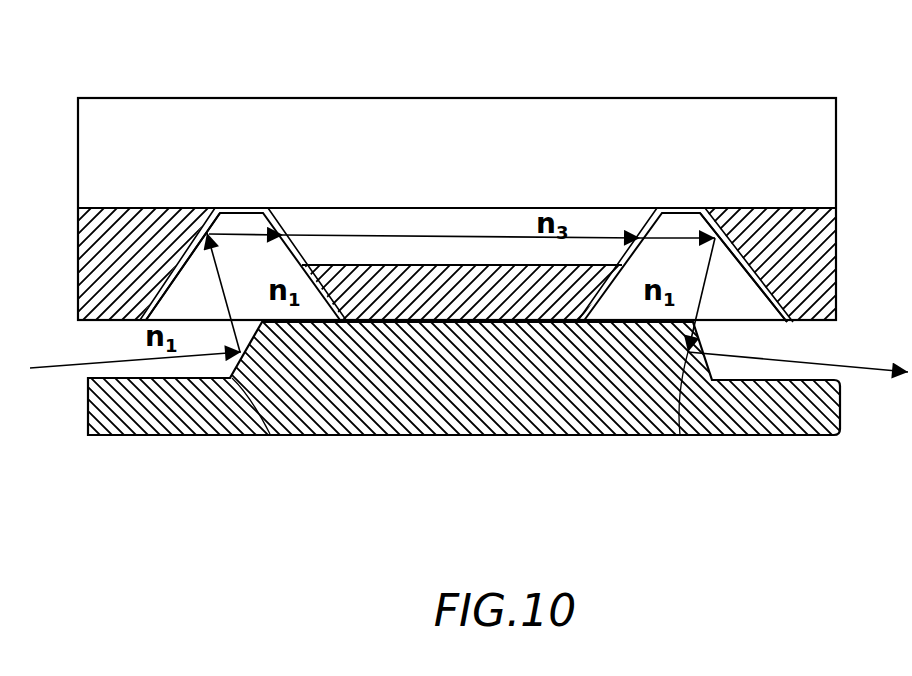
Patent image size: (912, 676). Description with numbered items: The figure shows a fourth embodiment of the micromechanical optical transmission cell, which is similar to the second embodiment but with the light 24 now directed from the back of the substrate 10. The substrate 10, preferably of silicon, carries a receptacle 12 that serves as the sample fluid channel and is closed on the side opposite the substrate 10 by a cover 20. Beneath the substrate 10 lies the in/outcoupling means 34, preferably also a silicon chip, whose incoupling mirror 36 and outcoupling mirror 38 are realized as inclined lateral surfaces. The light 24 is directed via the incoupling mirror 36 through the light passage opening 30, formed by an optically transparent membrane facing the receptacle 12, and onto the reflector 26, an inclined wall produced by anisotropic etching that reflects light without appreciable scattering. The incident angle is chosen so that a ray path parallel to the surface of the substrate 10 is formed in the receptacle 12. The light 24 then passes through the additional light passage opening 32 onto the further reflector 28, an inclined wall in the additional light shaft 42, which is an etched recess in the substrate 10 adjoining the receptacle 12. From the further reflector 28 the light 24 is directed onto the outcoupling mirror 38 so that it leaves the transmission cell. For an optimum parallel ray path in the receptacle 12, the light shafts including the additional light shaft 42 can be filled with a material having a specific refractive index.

The substrate 10 is at (495, 283).
The receptacle 12 is at (398, 222).
The cover 20 is at (673, 143).
The light 24 is at (70, 368).
The reflector 26 is at (203, 232).
The further reflector 28 is at (733, 213).
The optically transparent membrane 30 is at (278, 215).
The optically transparent membrane 32 is at (657, 217).
The in/outcoupling means 34 is at (552, 370).
The incoupling mirror 36 is at (270, 434).
The outcoupling mirror 38 is at (690, 437).
The additional light shaft 42 is at (246, 262).